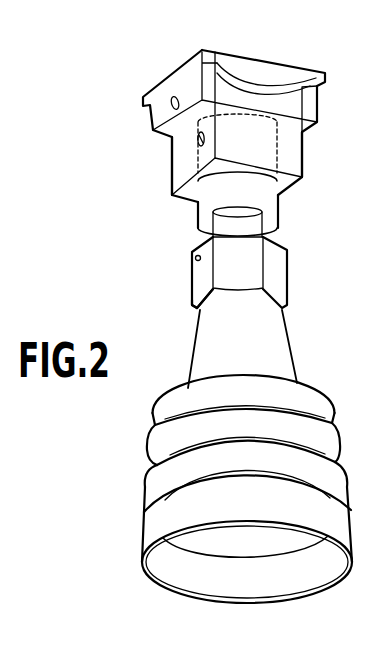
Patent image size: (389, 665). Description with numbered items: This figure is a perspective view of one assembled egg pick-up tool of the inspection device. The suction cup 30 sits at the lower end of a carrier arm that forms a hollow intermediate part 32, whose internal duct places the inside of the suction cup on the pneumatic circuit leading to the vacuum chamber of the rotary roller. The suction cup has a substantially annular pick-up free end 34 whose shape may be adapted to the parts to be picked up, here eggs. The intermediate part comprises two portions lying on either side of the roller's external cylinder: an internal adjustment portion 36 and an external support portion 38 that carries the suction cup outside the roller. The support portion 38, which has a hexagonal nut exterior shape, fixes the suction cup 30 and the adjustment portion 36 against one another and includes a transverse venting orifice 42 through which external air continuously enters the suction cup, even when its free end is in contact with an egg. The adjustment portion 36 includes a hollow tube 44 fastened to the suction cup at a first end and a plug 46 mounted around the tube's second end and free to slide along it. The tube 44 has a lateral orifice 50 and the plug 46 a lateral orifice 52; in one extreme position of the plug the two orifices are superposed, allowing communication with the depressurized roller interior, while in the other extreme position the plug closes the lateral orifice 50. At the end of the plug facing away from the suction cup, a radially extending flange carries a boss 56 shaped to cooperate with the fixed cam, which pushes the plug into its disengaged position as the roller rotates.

The suction cup 30 is at (304, 402).
The hollow intermediate part 32 is at (304, 279).
The pick-up free end 34 is at (192, 584).
The internal adjustment portion 36 is at (156, 197).
The external support portion 38 is at (202, 285).
The transverse venting orifice 42 is at (191, 258).
The hollow tube 44 is at (267, 202).
The plug 46 is at (293, 150).
The lateral orifice of the tube 50 is at (199, 142).
The lateral orifice of the plug 52 is at (173, 110).
The boss 56 is at (273, 81).